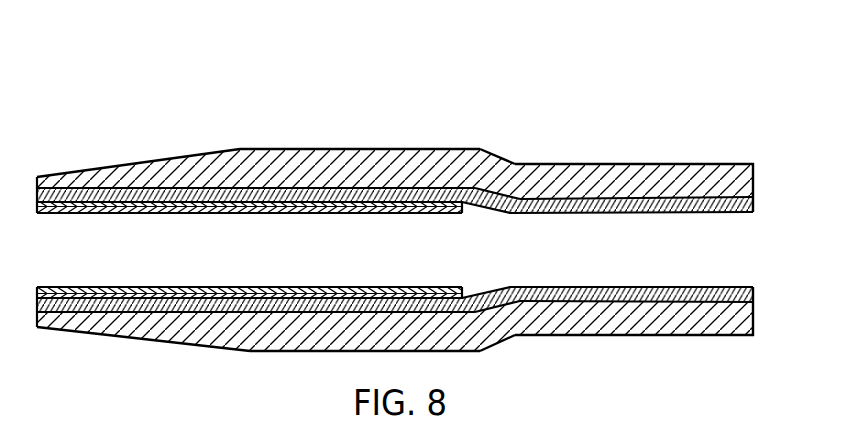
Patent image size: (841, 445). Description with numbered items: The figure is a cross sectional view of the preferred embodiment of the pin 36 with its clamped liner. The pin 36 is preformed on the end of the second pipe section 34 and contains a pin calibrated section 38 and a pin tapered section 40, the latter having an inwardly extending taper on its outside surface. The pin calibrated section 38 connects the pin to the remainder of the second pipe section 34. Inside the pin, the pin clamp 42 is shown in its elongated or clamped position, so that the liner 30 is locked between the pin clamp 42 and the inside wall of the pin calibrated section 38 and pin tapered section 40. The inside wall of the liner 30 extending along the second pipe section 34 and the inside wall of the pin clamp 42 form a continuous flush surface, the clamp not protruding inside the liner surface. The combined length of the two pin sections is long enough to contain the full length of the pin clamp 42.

The liner 30 is at (158, 188).
The second pipe section 34 is at (631, 164).
The pin 36 is at (341, 80).
The pin calibrated section 38 is at (424, 149).
The pin tapered section 40 is at (87, 171).
The pin clamp 42 is at (262, 202).